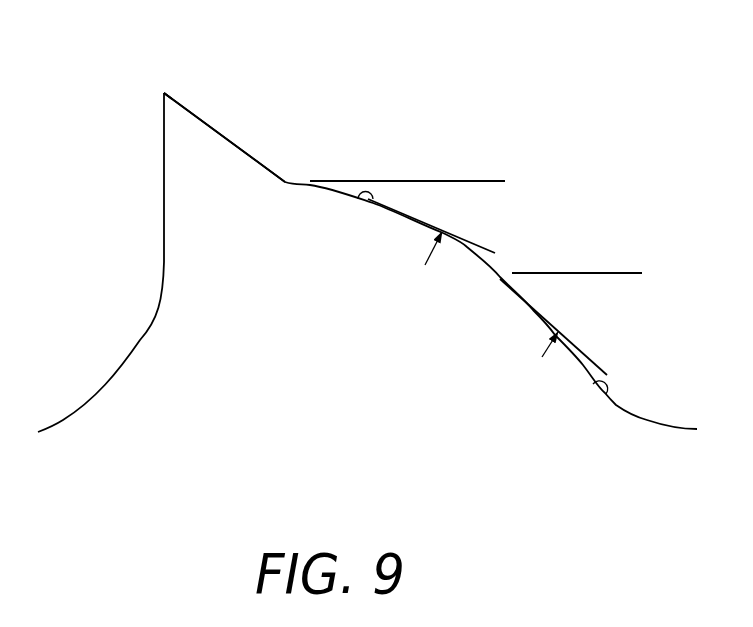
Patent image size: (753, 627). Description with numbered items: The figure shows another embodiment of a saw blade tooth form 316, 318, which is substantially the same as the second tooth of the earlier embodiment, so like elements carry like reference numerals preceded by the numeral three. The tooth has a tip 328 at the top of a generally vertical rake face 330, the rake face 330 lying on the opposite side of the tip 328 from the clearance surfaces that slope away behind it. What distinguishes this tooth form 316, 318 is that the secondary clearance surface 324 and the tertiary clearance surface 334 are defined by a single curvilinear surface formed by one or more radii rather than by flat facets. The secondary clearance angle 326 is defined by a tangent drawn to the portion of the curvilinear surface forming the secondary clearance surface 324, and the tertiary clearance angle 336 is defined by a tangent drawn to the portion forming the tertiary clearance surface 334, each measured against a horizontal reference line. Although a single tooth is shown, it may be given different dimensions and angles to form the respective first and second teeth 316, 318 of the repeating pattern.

The tooth form 316 is at (396, 68).
The tooth form 318 is at (430, 261).
The secondary clearance surface 324 is at (373, 199).
The secondary clearance angle 326 is at (196, 114).
The tip 328 is at (164, 93).
The rake face 330 is at (164, 177).
The tertiary clearance surface 334 is at (606, 389).
The tertiary clearance angle 336 is at (568, 272).